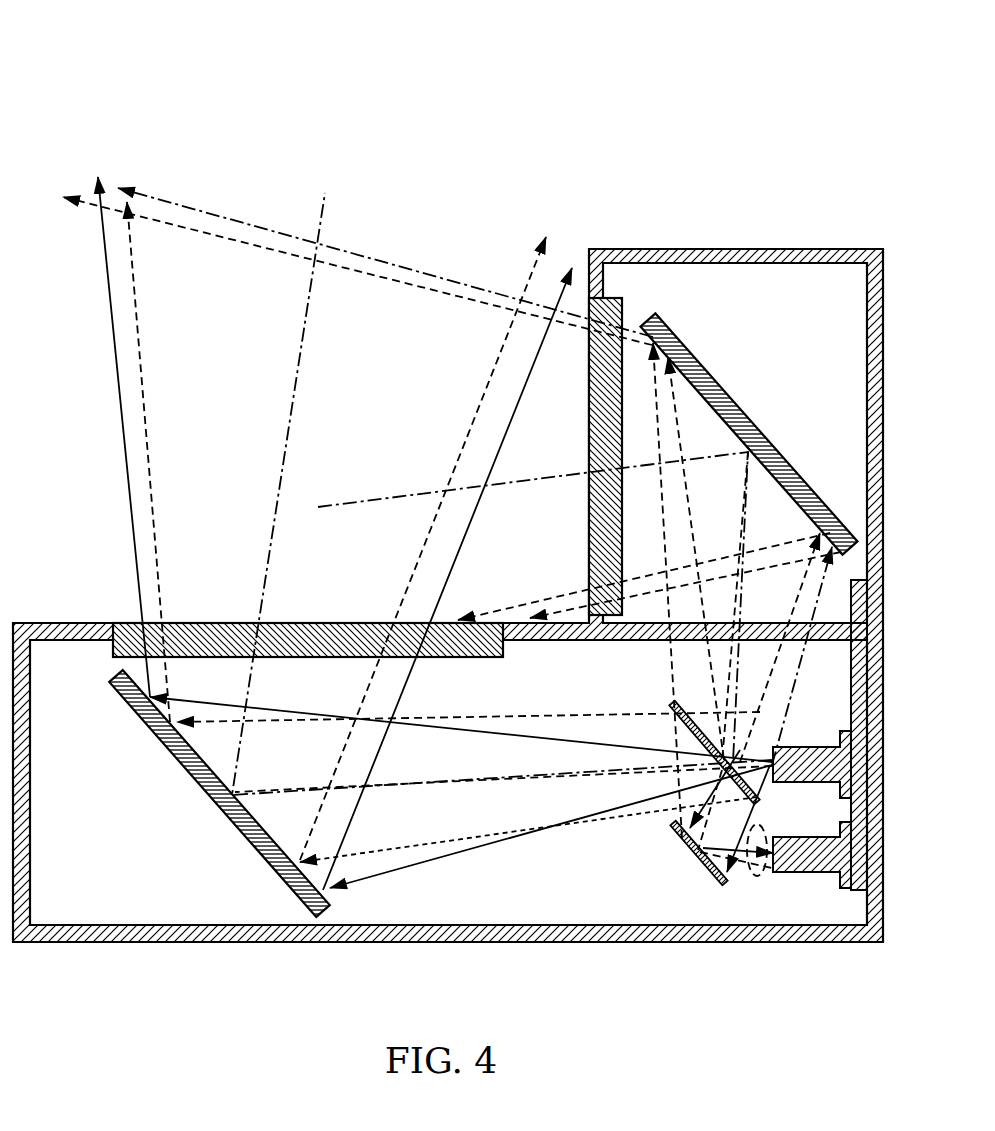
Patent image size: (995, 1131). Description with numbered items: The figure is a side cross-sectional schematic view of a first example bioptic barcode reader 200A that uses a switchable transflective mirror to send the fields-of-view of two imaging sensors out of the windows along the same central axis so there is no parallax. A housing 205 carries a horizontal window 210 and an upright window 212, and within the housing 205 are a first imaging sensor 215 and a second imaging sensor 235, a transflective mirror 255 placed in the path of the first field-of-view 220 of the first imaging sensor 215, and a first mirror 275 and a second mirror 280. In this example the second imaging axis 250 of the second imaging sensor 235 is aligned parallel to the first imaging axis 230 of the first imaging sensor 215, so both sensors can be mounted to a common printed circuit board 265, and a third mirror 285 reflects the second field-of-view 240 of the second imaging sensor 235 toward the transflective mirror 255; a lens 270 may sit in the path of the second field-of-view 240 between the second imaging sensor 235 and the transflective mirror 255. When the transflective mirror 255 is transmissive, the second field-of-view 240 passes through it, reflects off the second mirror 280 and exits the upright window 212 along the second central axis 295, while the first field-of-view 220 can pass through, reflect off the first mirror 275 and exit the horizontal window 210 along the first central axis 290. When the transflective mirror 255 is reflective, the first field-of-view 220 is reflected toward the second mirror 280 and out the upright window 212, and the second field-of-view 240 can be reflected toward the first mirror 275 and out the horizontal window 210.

The bioptic barcode reader 200A is at (170, 56).
The housing 205 is at (740, 249).
The horizontal window 210 is at (219, 623).
The upright window 212 is at (589, 533).
The first imaging sensor 215 is at (833, 740).
The first field-of-view 220 is at (232, 240).
The first imaging axis 230 is at (530, 777).
The second imaging sensor 235 is at (843, 895).
The second field-of-view 240 is at (393, 262).
The second imaging axis 250 is at (705, 866).
The transflective mirror 255 is at (672, 704).
The common printed circuit board 265 is at (851, 660).
The lens 270 is at (752, 878).
The first mirror 275 is at (212, 800).
The second mirror 280 is at (762, 432).
The third mirror 285 is at (673, 827).
The first central axis 290 is at (296, 372).
The second central axis 295 is at (387, 495).